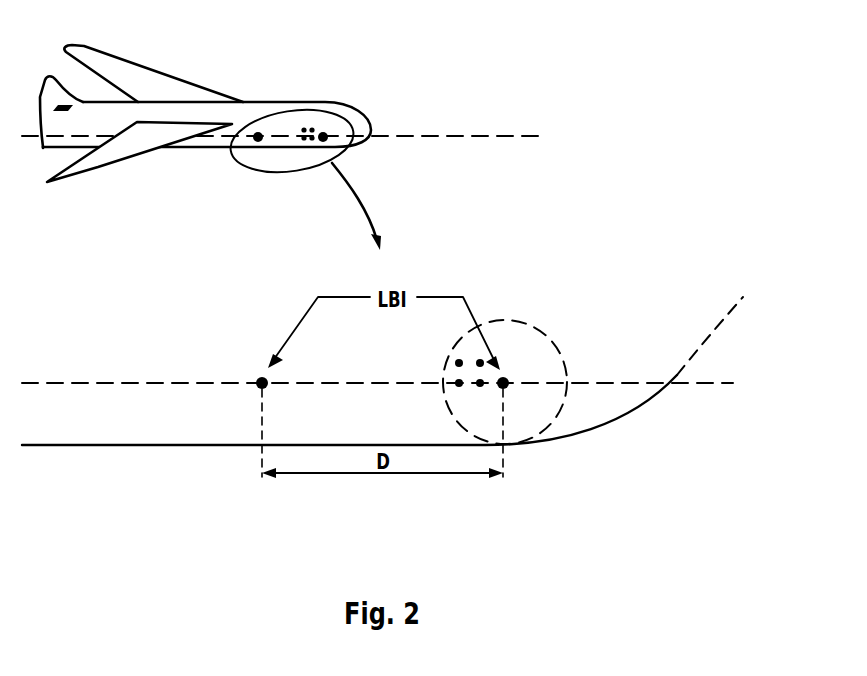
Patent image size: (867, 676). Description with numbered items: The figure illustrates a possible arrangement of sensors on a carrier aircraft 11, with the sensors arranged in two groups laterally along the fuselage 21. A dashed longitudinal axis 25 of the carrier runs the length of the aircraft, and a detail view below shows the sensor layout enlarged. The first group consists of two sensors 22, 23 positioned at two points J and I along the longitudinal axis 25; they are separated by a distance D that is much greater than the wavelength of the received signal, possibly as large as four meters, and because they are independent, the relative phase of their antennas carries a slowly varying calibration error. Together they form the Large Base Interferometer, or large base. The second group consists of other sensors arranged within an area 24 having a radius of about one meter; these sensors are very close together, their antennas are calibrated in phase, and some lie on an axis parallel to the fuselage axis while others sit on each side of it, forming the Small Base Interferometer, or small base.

The aircraft 11 is at (173, 77).
The fuselage 21 is at (135, 447).
The sensor 22 is at (258, 390).
The sensor 23 is at (507, 386).
The area 24 is at (527, 325).
The longitudinal axis 25 is at (495, 137).